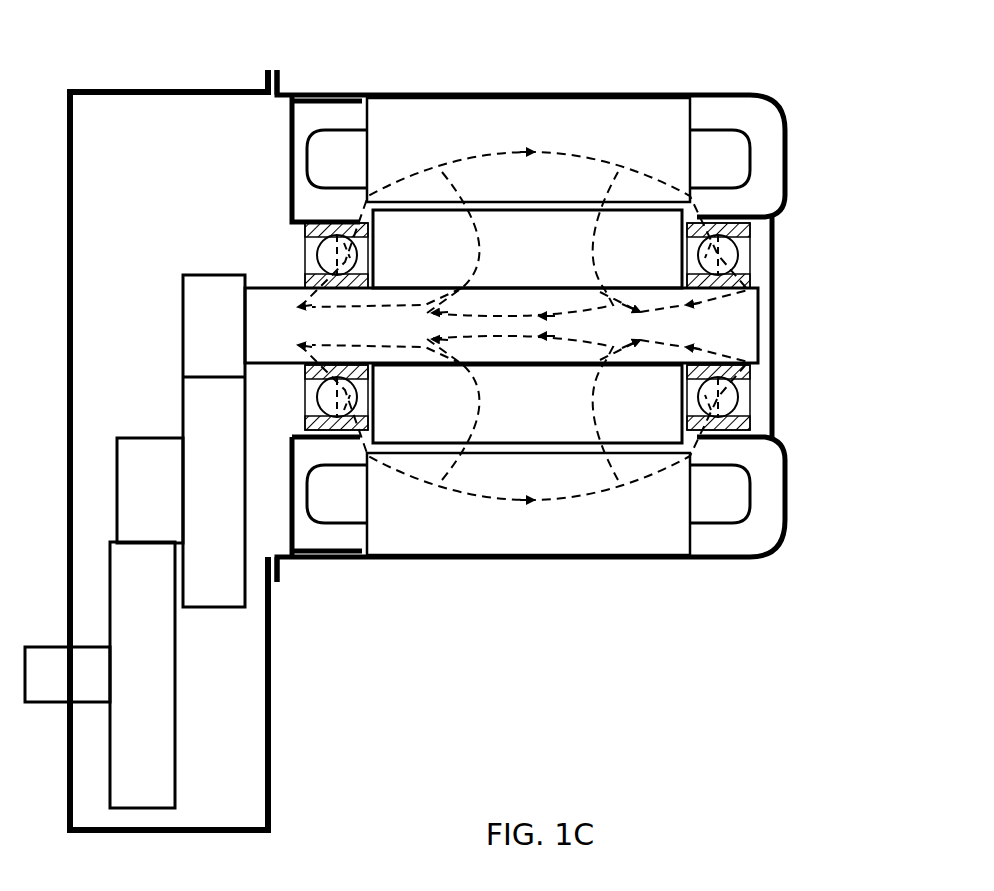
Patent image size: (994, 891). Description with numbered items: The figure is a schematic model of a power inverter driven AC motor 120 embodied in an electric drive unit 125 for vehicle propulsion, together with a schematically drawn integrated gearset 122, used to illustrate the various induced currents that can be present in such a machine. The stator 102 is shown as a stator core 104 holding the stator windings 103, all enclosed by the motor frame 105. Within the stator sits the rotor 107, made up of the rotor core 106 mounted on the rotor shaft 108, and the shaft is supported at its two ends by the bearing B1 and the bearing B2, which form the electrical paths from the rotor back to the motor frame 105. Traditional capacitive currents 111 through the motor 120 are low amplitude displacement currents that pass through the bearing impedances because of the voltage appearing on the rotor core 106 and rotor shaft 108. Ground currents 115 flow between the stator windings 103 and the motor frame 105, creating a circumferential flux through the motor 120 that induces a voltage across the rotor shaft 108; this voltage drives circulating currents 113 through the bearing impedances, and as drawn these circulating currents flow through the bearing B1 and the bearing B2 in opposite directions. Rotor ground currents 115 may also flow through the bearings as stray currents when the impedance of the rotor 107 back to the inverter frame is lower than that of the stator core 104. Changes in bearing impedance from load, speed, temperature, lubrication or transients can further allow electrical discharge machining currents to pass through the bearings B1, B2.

The stator 102 is at (805, 148).
The stator windings 103 is at (345, 128).
The stator core 104 is at (528, 326).
The motor frame 105 is at (283, 76).
The rotor core 106 is at (527, 326).
The rotor 107 is at (245, 262).
The rotor shaft 108 is at (501, 325).
The capacitive currents 111 is at (465, 280).
The circulating currents 113 is at (557, 151).
The ground currents 115 is at (305, 345).
The motor 120 is at (265, 155).
The integrated gearset 122 is at (138, 325).
The electric drive unit 125 is at (612, 65).
The bearing B1 is at (750, 278).
The bearing B2 is at (305, 278).